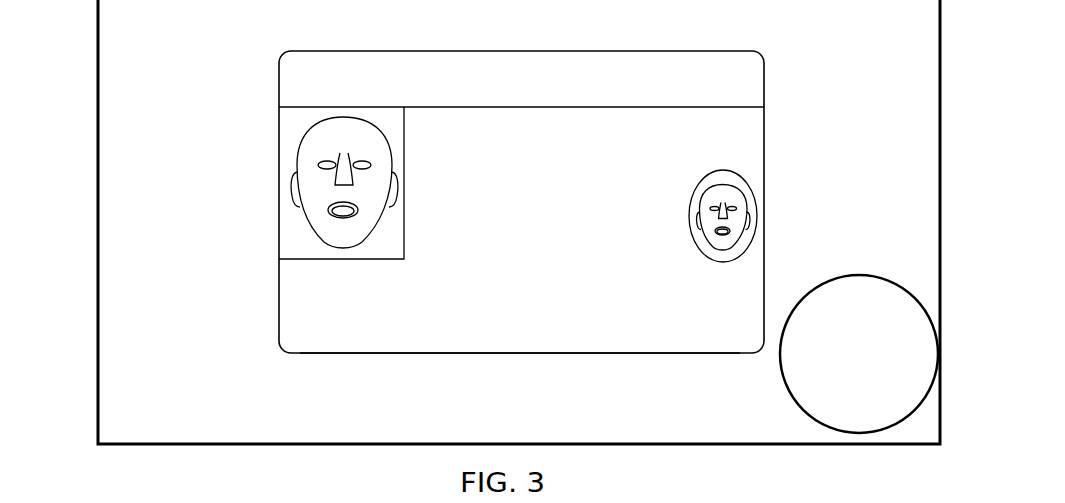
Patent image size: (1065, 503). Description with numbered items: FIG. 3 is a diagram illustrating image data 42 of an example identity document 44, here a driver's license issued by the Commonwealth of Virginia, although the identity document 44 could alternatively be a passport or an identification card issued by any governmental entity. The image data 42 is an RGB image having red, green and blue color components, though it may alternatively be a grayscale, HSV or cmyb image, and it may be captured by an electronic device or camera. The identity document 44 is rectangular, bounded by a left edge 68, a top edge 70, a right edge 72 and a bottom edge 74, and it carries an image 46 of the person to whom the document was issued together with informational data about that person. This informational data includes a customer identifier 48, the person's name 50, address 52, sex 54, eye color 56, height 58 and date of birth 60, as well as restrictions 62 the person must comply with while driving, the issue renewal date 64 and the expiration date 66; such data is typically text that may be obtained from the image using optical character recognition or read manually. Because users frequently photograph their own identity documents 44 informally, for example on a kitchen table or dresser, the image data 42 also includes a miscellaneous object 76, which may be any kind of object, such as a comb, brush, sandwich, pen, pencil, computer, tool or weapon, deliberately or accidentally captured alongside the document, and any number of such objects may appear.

The image data 42 is at (72, 35).
The identity document 44 is at (279, 68).
The image 46 is at (303, 220).
The customer identifier 48 is at (517, 120).
The name 50 is at (517, 164).
The address 52 is at (465, 205).
The sex 54 is at (438, 262).
The eye color 56 is at (440, 292).
The height 58 is at (413, 322).
The date of birth 60 is at (642, 250).
The restrictions 62 is at (540, 330).
The issue renewal date 64 is at (660, 292).
The expiration date 66 is at (645, 322).
The left edge 68 is at (279, 170).
The top edge 70 is at (538, 51).
The right edge 72 is at (764, 152).
The bottom edge 74 is at (510, 355).
The miscellaneous object 76 is at (859, 275).